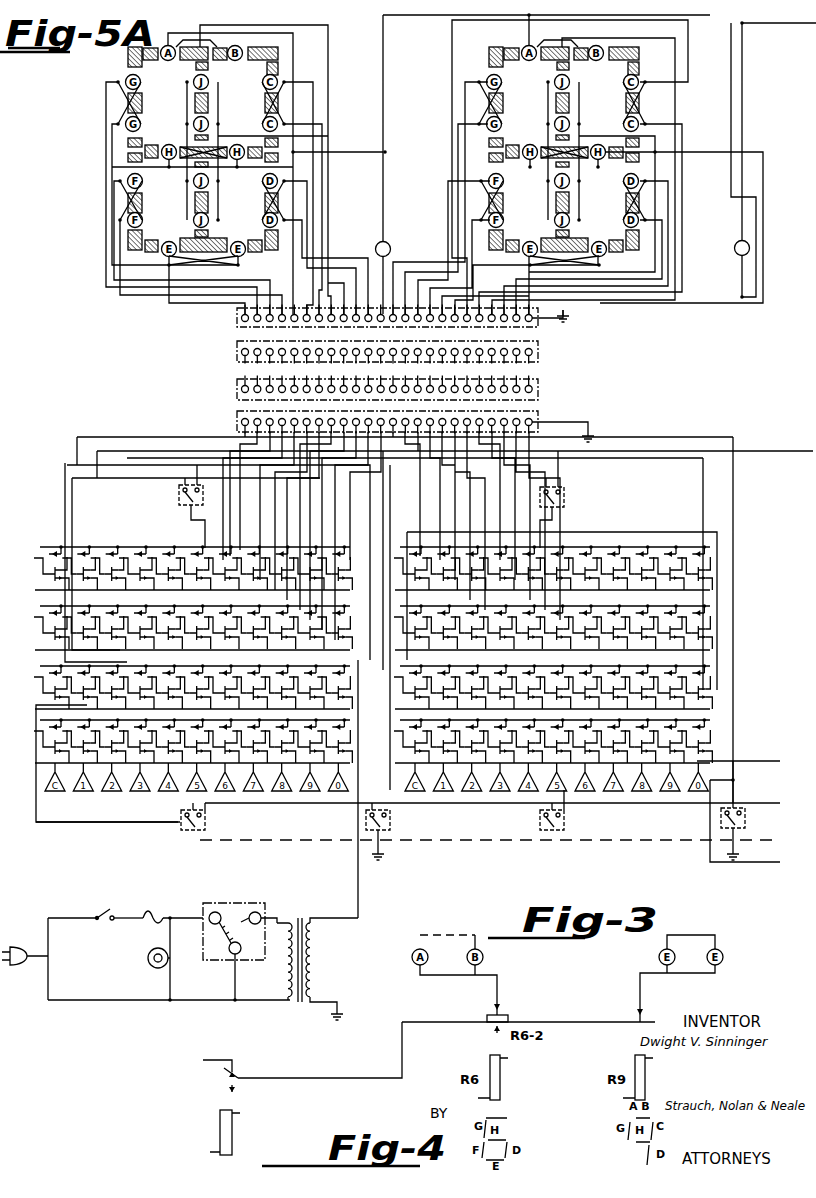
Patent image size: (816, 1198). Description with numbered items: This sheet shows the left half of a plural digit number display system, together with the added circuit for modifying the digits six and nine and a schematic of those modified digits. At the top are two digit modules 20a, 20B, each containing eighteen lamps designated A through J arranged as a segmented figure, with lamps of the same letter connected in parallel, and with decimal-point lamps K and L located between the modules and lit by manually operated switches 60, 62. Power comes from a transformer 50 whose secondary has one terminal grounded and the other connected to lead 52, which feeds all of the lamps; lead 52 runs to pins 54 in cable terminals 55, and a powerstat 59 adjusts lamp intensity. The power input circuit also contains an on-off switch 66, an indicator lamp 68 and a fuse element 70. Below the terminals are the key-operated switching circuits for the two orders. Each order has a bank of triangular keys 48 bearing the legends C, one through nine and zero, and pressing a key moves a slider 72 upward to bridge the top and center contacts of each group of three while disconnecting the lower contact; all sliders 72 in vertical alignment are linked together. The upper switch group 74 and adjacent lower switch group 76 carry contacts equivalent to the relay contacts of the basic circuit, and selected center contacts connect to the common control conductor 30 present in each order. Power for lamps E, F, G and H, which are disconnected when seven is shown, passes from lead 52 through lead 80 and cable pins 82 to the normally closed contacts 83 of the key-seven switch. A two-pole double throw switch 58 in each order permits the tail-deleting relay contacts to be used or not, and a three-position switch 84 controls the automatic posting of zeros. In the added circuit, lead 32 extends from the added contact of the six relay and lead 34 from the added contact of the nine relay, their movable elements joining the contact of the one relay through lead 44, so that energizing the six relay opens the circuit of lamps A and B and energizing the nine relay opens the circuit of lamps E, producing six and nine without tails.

In FIG. 5A, the digit module 20a is at (103, 102).
In FIG. 5A, the digit module 20B is at (712, 13).
In FIG. 5A, the lead 52 is at (758, 27).
In FIG. 5A, the lead 80 is at (237, 312).
In FIG. 5A, the cable pins 82 is at (240, 338).
In FIG. 5A, the pins 54 is at (538, 326).
In FIG. 5A, the cable terminals 55 is at (411, 374).
In FIG. 5A, the common control conductor 30 is at (400, 635).
In FIG. 5A, the two-pole double throw switch 58 is at (186, 498).
In FIG. 5A, the upper switch group 74 is at (367, 657).
In FIG. 5A, the slider 72 is at (366, 657).
In FIG. 5A, the lower switch group 76 is at (367, 668).
In FIG. 5A, the normally closed contacts 83 is at (252, 590).
In FIG. 5A, the keys 48 is at (105, 794).
In FIG. 5A, the switch 84 is at (195, 832).
In FIG. 5A, the manually operated switch 60 is at (386, 840).
In FIG. 5A, the manually operated switch 62 is at (745, 822).
In FIG. 4, the on-off switch 66 is at (100, 914).
In FIG. 4, the fuse element 70 is at (150, 916).
In FIG. 4, the indicator lamp 68 is at (147, 955).
In FIG. 4, the powerstat 59 is at (256, 894).
In FIG. 4, the transformer 50 is at (304, 918).
In FIG. 4, the lead 44 is at (360, 1078).
In FIG. 3, the lead 32 is at (497, 990).
In FIG. 3, the lead 34 is at (640, 990).